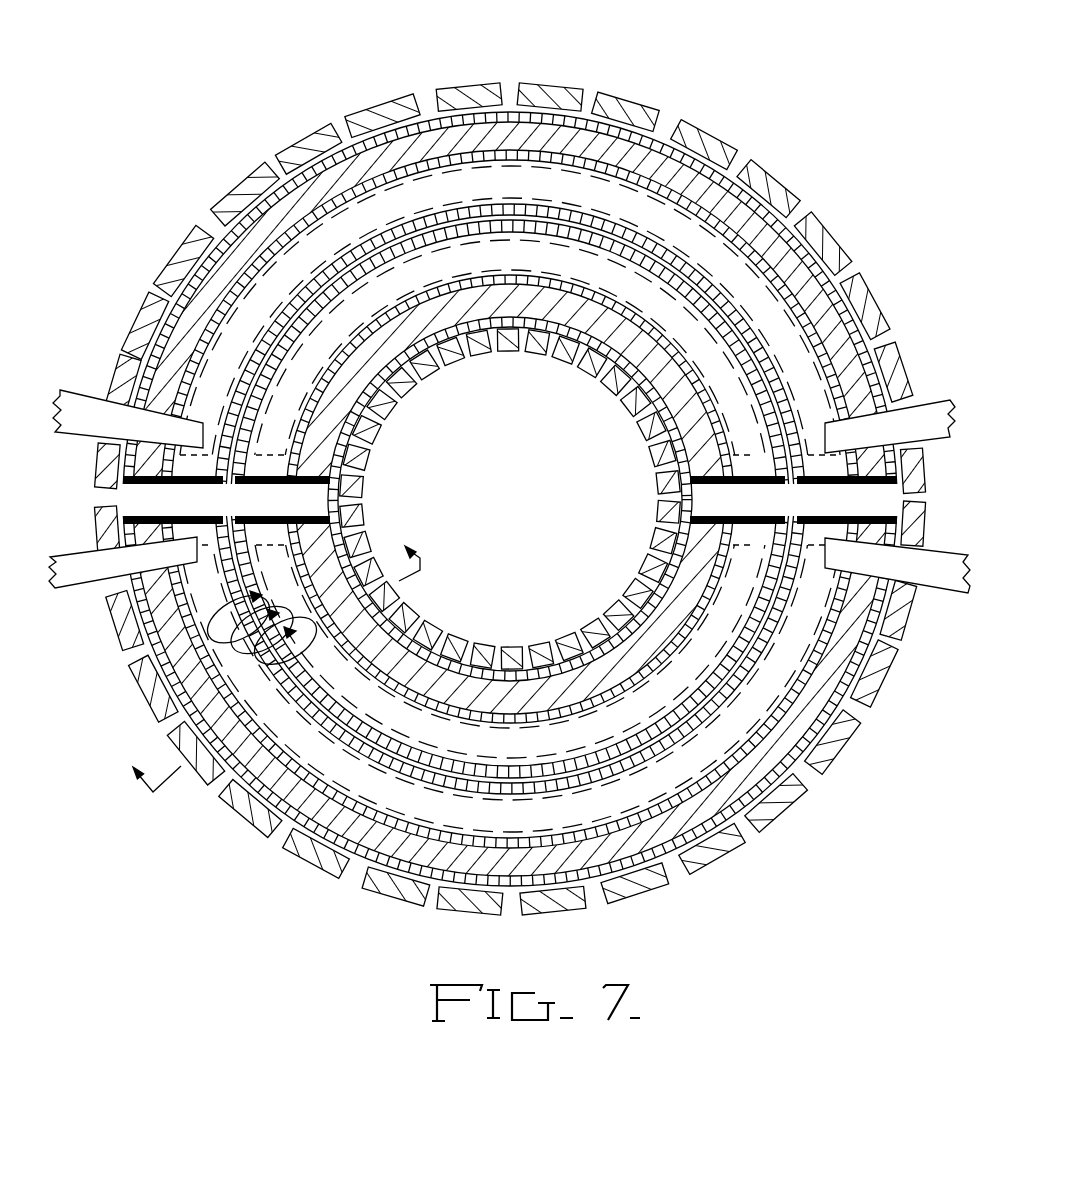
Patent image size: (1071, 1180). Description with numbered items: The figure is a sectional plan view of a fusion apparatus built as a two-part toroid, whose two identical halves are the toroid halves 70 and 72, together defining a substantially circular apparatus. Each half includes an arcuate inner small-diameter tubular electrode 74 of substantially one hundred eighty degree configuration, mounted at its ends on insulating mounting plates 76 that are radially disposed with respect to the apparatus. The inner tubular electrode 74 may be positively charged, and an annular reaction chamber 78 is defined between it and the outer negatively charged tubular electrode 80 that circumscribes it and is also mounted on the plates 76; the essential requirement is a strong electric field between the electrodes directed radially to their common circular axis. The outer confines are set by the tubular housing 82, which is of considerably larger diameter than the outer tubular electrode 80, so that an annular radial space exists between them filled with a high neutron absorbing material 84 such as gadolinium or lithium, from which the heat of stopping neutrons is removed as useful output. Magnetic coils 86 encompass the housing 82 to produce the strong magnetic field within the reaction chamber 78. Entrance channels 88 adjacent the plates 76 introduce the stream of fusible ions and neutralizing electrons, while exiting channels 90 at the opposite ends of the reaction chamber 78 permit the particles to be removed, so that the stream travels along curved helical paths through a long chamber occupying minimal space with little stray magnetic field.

The toroid half 70 is at (754, 136).
The toroid half 72 is at (318, 880).
The inner tubular electrode 74 is at (353, 272).
The mounting plates 76 is at (250, 516).
The annular reaction chamber 78 is at (445, 201).
The outer tubular electrode 80 is at (628, 120).
The tubular housing 82 is at (386, 626).
The neutron absorbing material 84 is at (486, 128).
The magnetic coils 86 is at (874, 287).
The entrance channels 88 is at (926, 404).
The exiting channels 90 is at (108, 399).